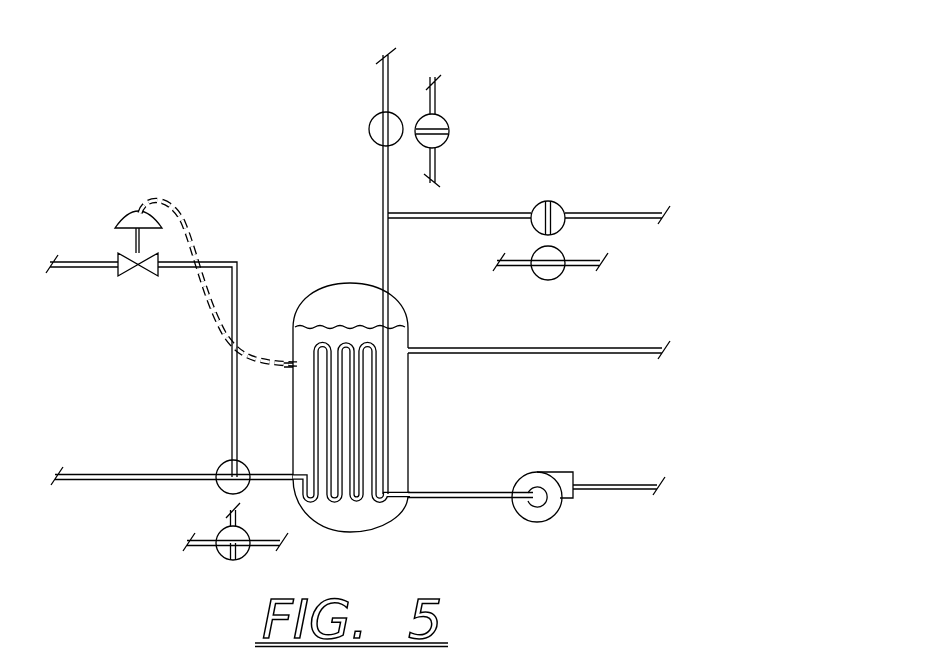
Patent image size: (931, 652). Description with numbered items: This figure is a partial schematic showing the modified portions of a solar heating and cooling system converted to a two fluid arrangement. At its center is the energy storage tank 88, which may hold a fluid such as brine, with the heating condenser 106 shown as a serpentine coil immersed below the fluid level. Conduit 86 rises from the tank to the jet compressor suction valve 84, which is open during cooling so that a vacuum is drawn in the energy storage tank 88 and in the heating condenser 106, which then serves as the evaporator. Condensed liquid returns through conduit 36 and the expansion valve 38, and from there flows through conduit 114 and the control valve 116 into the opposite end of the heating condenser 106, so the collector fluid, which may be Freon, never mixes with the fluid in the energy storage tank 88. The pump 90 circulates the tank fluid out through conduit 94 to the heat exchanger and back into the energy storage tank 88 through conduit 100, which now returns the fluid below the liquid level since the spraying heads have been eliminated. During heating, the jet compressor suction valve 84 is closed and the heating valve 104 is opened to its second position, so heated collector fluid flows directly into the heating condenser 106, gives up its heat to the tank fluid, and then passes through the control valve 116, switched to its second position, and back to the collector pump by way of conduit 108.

The conduit 36 is at (73, 268).
The expansion valve 38 is at (131, 256).
The jet compressor suction valve 84 is at (369, 126).
The conduit 86 is at (383, 191).
The energy storage tank 88 is at (396, 292).
The pump 90 is at (545, 472).
The conduit 94 is at (462, 499).
The conduit 100 is at (560, 348).
The heating valve 104 is at (553, 203).
The heating condenser 106 is at (384, 447).
The conduit 108 is at (125, 474).
The conduit 114 is at (222, 262).
The control valve 116 is at (222, 489).